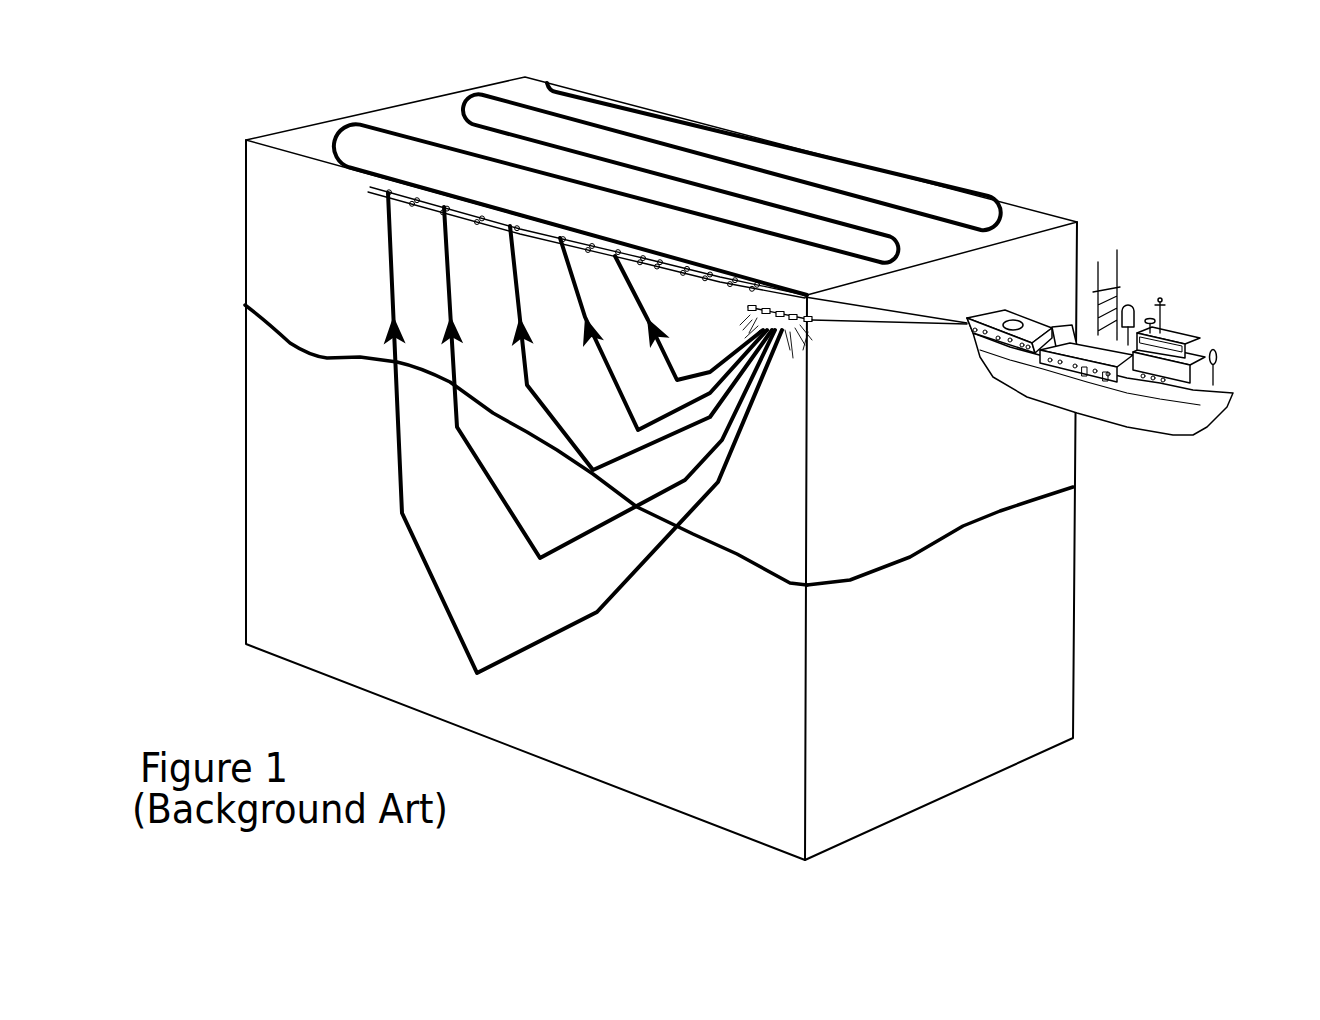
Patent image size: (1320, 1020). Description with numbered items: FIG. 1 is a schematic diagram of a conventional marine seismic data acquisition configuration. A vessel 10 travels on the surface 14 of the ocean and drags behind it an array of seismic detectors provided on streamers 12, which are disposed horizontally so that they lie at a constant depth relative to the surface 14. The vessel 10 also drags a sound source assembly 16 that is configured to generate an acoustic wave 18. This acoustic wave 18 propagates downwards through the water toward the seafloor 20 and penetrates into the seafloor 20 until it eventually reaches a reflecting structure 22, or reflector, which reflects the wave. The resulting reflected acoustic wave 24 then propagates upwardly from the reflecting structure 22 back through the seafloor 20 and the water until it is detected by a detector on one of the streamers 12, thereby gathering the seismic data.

The vessel 10 is at (1195, 325).
The streamers 12 is at (583, 226).
The surface 14 is at (414, 158).
The sound source assembly 16 is at (808, 284).
The acoustic wave 18 is at (720, 478).
The seafloor 20 is at (1031, 488).
The reflecting structure 22 is at (322, 478).
The reflected acoustic wave 24 is at (390, 404).